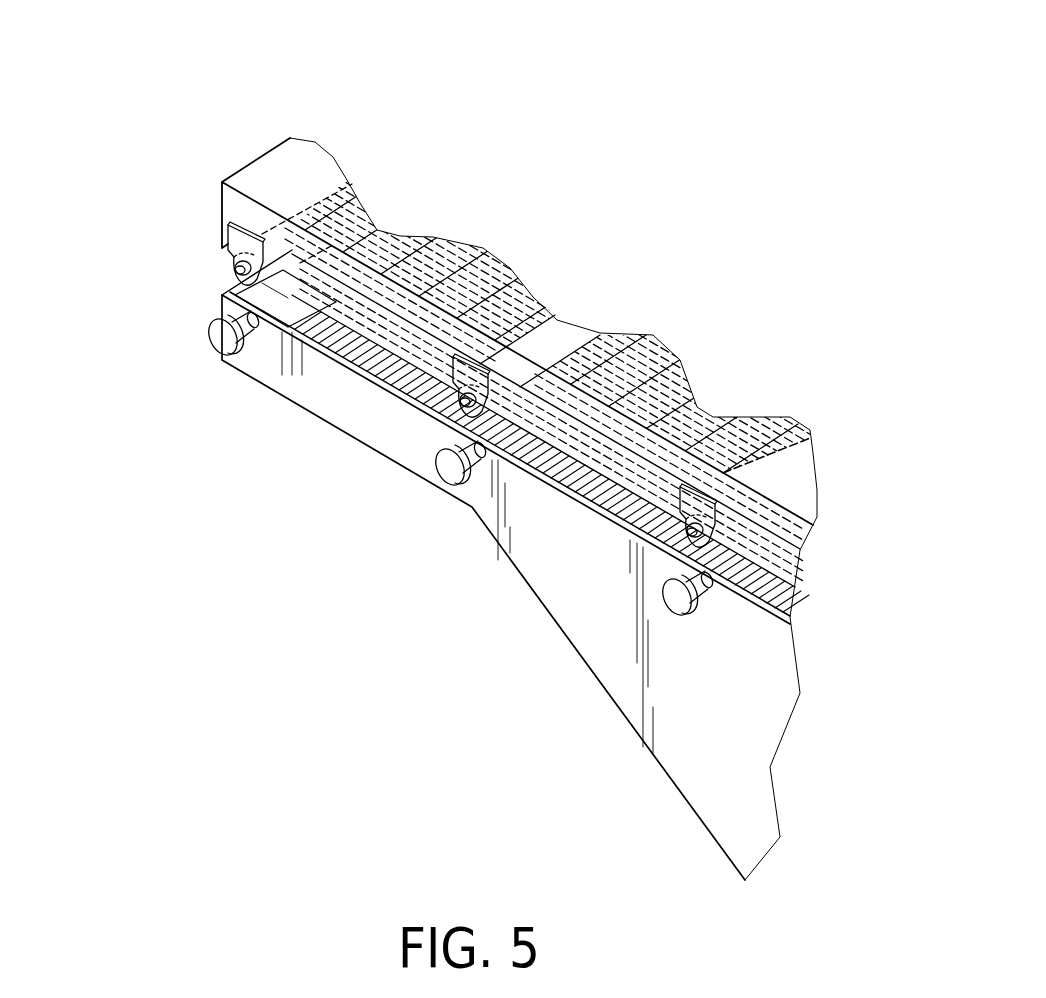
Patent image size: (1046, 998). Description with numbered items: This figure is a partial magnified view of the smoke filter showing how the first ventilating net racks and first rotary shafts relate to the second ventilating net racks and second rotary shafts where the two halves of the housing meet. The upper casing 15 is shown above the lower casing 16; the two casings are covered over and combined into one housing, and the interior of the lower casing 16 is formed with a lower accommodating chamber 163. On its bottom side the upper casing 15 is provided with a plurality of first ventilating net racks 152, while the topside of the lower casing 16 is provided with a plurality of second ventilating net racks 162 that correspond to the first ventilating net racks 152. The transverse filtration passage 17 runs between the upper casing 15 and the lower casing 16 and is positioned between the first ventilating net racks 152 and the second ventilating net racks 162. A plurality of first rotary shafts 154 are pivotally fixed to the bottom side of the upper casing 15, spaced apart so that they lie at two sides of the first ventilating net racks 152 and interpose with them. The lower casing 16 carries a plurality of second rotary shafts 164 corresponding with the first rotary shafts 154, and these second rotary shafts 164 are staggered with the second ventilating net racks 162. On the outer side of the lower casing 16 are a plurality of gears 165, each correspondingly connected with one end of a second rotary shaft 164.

The upper casing 15 is at (260, 148).
The first ventilating net racks 152 is at (466, 250).
The first rotary shafts 154 is at (220, 260).
The filtration passage 17 is at (233, 282).
The second rotary shafts 164 is at (288, 310).
The gears 165 is at (220, 340).
The lower accommodating chamber 163 is at (310, 360).
The second ventilating net racks 162 is at (373, 380).
The lower casing 16 is at (423, 462).